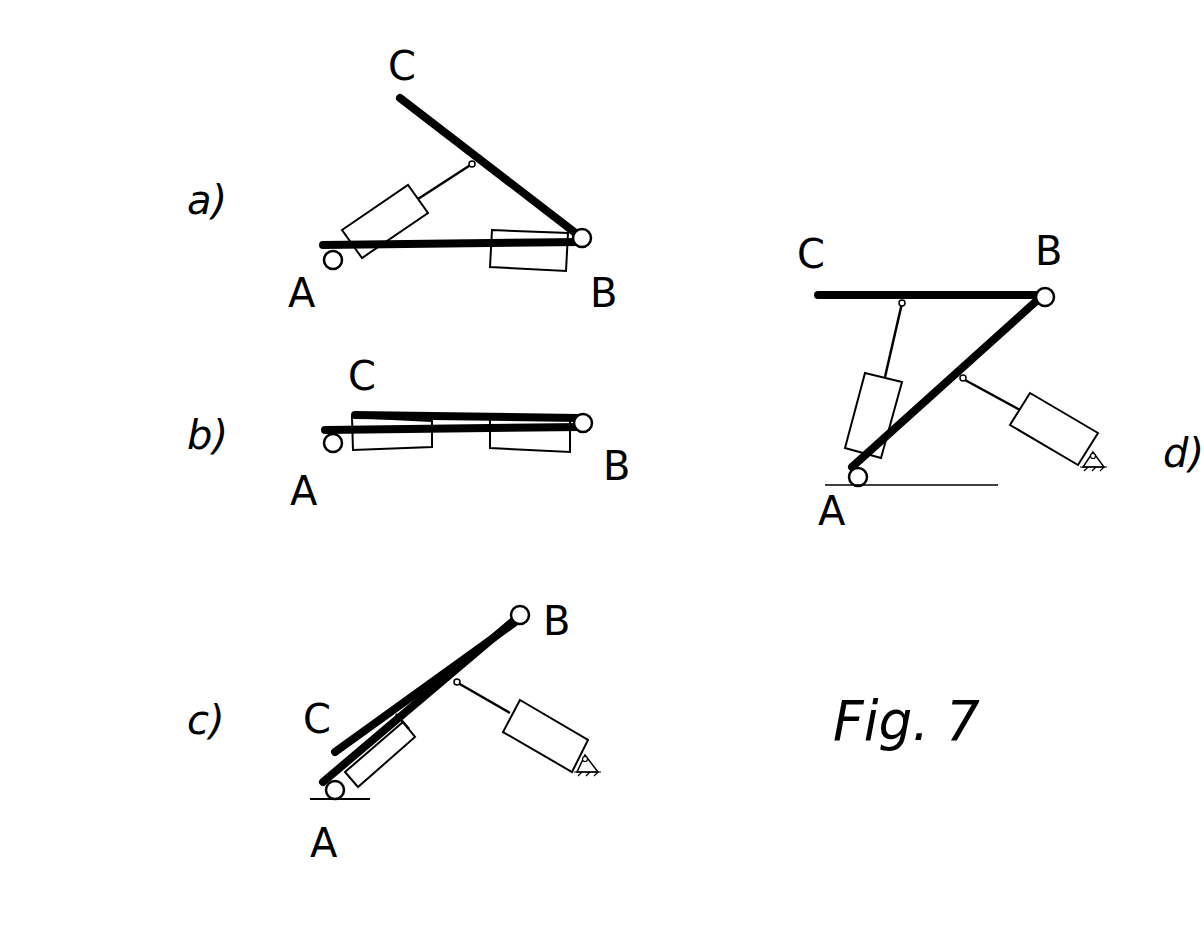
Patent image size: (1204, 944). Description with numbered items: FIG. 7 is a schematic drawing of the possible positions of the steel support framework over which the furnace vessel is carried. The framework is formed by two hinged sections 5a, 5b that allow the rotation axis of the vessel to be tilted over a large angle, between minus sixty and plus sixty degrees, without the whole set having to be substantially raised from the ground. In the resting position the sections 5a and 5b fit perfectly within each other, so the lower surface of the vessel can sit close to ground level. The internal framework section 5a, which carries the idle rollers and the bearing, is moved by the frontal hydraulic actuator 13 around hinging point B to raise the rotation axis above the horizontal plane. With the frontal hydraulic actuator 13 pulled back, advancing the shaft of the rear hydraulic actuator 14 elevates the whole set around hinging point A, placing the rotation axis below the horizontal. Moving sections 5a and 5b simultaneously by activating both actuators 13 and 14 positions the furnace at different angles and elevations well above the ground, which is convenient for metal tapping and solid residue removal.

The internal support framework section 5a is at (455, 138).
The support framework section 5b is at (457, 250).
The frontal hydraulic actuator 13 is at (395, 220).
The rear hydraulic actuator 14 is at (543, 263).